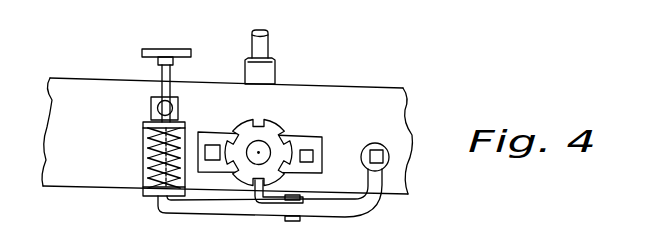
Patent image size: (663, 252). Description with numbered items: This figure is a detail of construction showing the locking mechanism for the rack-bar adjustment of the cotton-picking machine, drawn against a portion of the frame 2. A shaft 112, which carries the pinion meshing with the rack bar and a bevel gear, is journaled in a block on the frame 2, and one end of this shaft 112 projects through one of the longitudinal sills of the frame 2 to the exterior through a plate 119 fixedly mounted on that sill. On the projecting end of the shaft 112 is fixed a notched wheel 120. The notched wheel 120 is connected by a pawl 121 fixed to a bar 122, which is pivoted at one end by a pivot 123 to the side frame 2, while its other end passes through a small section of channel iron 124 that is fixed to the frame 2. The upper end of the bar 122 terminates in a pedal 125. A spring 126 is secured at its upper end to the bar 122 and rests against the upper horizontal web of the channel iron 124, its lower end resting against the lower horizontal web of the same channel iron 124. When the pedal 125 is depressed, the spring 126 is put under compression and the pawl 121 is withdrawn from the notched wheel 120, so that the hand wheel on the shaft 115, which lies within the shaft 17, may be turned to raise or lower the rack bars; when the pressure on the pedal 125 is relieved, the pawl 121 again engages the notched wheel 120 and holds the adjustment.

The frame 2 is at (390, 95).
The shaft 17 is at (271, 73).
The shaft 112 is at (268, 151).
The shaft 115 is at (270, 37).
The plate 119 is at (215, 138).
The notched wheel 120 is at (260, 130).
The pawl 121 is at (273, 204).
The bar 122 is at (192, 211).
The pivot 123 is at (375, 143).
The channel iron section 124 is at (143, 147).
The pedal 125 is at (174, 48).
The spring 126 is at (147, 135).